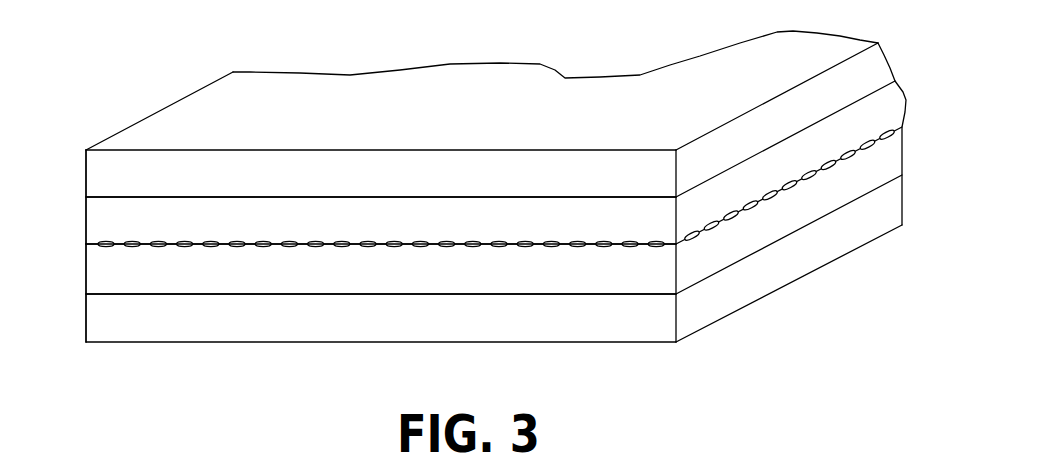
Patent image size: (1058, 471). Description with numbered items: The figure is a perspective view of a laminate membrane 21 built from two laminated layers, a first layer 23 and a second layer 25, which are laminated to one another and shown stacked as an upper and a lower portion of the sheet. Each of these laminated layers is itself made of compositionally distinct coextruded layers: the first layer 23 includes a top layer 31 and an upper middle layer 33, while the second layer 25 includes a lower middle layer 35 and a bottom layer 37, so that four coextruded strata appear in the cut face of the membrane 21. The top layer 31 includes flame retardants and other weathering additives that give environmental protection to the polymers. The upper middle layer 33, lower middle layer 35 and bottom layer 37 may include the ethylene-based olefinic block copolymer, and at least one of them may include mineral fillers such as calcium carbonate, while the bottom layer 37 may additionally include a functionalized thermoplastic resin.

The membrane 21 is at (882, 272).
The first layer 23 is at (83, 150).
The second layer 25 is at (83, 247).
The top layer 31 is at (238, 170).
The upper middle layer 33 is at (293, 223).
The lower middle layer 35 is at (197, 277).
The bottom layer 37 is at (290, 323).